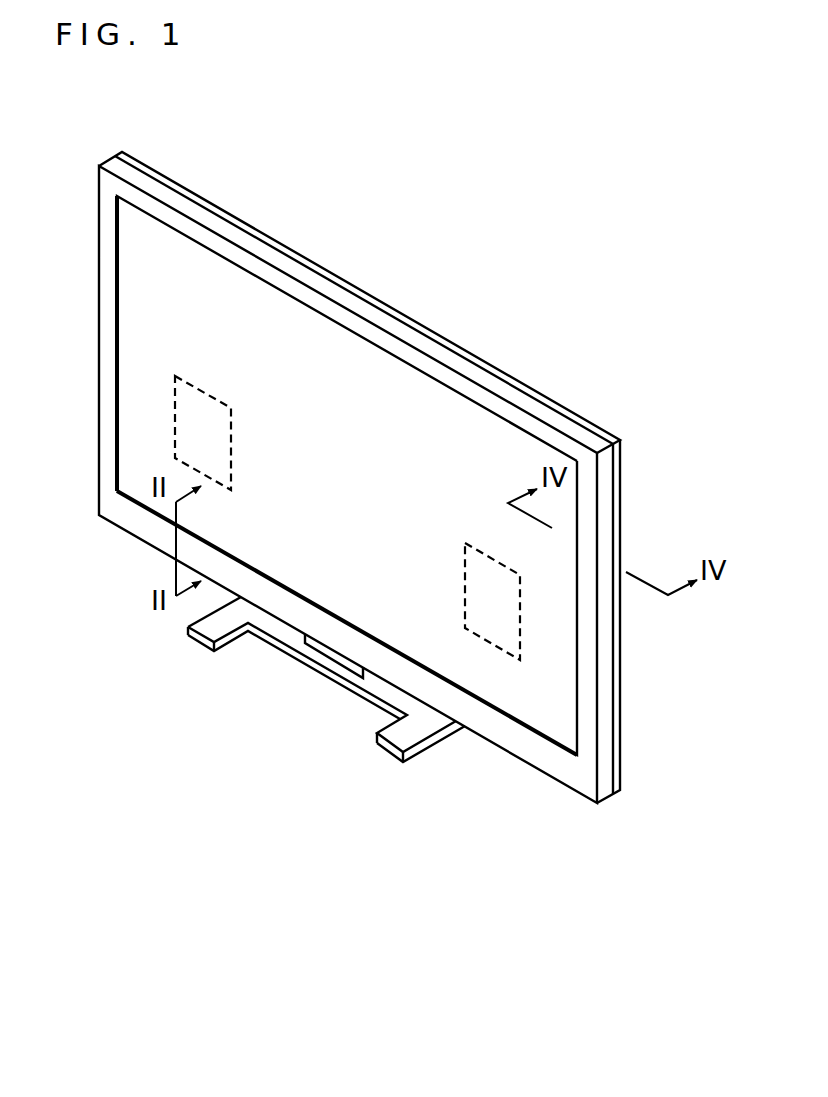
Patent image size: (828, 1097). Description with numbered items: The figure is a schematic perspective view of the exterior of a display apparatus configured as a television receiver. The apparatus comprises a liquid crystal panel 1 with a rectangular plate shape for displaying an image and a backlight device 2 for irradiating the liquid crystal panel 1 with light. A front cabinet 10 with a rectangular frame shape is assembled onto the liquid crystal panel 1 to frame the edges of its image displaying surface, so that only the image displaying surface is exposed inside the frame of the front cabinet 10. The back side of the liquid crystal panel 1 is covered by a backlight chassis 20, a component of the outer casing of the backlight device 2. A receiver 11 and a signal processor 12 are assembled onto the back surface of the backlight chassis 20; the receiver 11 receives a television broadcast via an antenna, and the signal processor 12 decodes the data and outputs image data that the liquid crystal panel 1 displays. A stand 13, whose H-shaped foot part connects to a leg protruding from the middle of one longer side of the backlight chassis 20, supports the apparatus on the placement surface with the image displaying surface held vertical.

The liquid crystal panel 1 is at (363, 380).
The backlight device 2 is at (504, 367).
The front cabinet 10 is at (527, 747).
The receiver 11 is at (200, 390).
The signal processor 12 is at (520, 622).
The stand 13 is at (193, 638).
The backlight chassis 20 is at (618, 733).